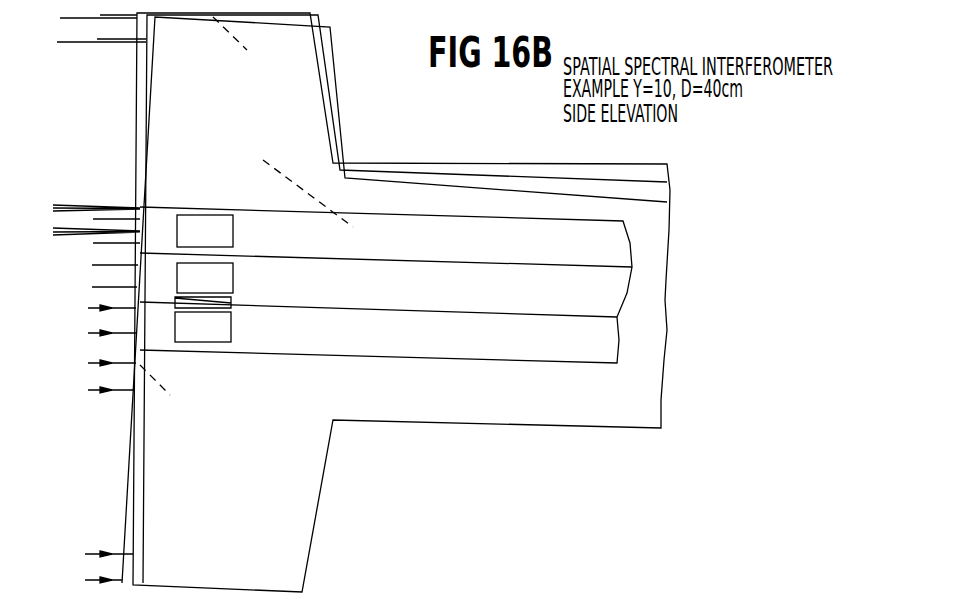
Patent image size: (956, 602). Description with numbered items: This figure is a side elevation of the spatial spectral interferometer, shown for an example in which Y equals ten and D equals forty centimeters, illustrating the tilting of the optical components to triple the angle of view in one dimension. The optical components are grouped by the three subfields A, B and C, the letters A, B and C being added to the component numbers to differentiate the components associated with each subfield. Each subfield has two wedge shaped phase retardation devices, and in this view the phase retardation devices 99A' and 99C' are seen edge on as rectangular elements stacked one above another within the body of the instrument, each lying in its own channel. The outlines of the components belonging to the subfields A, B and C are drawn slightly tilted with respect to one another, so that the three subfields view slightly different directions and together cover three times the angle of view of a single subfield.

The subfield A is at (137, 26).
The subfield B is at (146, 49).
The subfield C is at (150, 31).
The wedge shaped phase retardation device for subfield A 99A' is at (230, 275).
The wedge shaped phase retardation device for subfield C 99C' is at (228, 314).